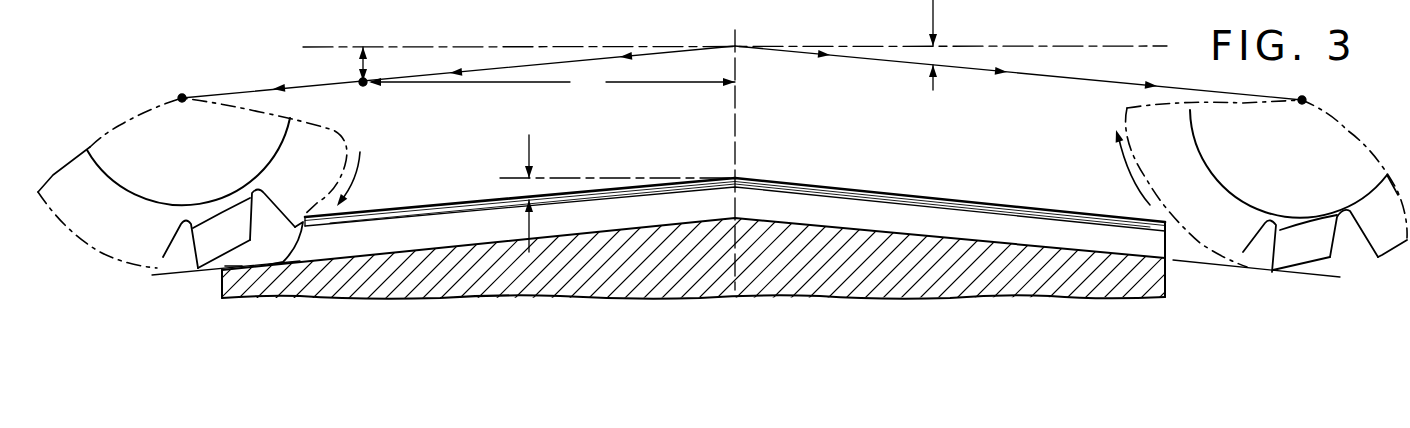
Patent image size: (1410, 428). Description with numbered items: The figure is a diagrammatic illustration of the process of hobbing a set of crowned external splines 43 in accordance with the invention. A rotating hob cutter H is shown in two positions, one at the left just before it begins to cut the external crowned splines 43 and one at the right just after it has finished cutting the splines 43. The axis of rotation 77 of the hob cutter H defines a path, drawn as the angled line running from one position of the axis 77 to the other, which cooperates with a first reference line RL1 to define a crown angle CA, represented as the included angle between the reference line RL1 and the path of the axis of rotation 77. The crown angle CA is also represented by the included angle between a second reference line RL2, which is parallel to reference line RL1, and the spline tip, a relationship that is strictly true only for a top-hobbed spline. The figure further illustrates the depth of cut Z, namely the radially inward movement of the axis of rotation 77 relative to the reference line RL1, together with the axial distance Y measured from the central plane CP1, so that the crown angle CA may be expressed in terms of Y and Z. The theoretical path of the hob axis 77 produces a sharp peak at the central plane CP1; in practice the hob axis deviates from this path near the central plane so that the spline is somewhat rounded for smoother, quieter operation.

The axis of rotation 77 is at (182, 98).
The external crowned splines 43 is at (958, 218).
The hob cutter H is at (120, 135).
The first reference line RL1 is at (770, 45).
The second reference line RL2 is at (628, 176).
The central plane CP1 is at (737, 98).
The crown angle CA is at (734, 126).
The axial distance Y is at (552, 83).
The depth of cut Z is at (360, 62).